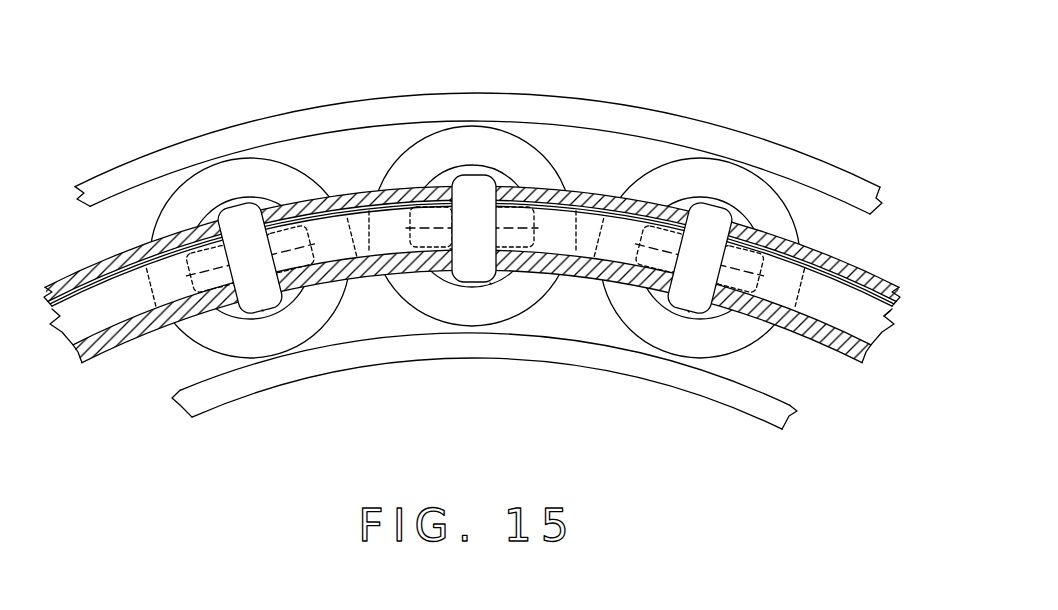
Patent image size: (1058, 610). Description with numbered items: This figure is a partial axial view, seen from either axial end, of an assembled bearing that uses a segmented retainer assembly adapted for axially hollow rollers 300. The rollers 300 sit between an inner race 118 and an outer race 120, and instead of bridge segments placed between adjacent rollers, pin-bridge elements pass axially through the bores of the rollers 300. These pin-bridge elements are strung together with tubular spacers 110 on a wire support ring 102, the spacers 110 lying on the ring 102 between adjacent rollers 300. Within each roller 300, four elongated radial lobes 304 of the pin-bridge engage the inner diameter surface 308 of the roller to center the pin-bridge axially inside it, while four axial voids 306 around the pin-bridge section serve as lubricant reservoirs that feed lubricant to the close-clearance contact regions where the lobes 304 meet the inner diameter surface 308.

The first ring 102 is at (883, 330).
The spacers 110 is at (118, 255).
The inner race 118 is at (757, 407).
The outer race 120 is at (800, 167).
The hollow roller 300 is at (247, 170).
The elongated radial lobes 304 is at (240, 213).
The axial voids 306 is at (270, 203).
The inner diameter surface 308 is at (266, 313).